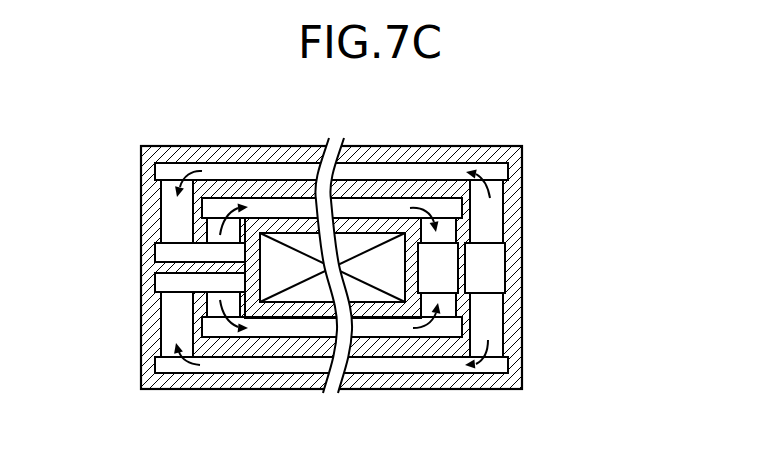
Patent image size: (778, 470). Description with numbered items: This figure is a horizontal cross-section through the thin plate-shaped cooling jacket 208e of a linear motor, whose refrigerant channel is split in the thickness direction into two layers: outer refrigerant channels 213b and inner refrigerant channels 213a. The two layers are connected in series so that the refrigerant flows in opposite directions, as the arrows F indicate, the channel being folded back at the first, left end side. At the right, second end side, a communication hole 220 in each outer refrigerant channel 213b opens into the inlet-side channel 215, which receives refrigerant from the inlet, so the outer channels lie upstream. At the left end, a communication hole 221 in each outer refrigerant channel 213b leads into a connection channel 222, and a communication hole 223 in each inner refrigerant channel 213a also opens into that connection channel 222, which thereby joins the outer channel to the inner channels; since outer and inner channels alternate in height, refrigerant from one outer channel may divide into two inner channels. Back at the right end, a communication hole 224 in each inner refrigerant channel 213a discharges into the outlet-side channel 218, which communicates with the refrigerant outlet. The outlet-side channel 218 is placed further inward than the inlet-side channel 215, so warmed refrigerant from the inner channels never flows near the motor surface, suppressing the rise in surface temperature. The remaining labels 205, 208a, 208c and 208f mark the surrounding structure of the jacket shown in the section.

The power transmission device / housing 205 is at (519, 124).
The bottom wall of case 208a is at (359, 386).
The top wall of case 208c is at (182, 158).
The cooling jacket 208e is at (523, 379).
The left side wall of case 208f is at (142, 381).
The inner refrigerant channel 213a is at (275, 207).
The outer refrigerant channel 213b is at (428, 170).
The inlet-side channel 215 is at (488, 273).
The outlet-side channel 218 is at (443, 261).
The communication hole 220 is at (492, 207).
The communication hole 221 is at (172, 202).
The connection channel 222 is at (165, 282).
The communication hole 223 is at (210, 231).
The communication hole 224 is at (448, 227).
The arrow indicating flowing direction of refrigerant F is at (177, 363).